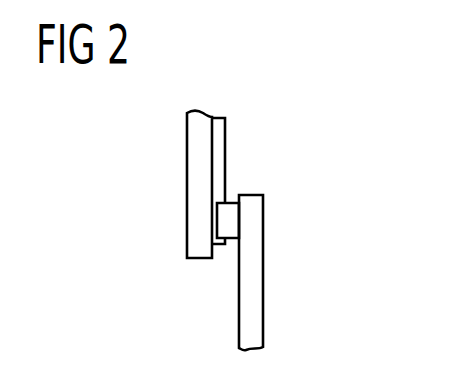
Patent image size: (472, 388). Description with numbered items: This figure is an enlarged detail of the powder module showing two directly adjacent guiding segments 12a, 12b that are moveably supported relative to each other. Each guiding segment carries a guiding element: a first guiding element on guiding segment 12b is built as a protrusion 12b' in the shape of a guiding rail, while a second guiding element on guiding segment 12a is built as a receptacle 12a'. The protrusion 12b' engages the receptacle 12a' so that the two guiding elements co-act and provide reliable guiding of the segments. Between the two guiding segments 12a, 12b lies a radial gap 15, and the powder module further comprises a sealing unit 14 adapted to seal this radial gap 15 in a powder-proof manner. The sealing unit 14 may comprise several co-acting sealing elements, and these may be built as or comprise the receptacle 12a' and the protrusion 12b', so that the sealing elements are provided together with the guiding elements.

The guiding segment 12b is at (154, 184).
The protrusion 12b' is at (267, 173).
The guiding segment 12a is at (294, 272).
The receptacle 12a' is at (276, 229).
The radial gap 15 is at (242, 181).
The sealing unit 14 is at (218, 269).